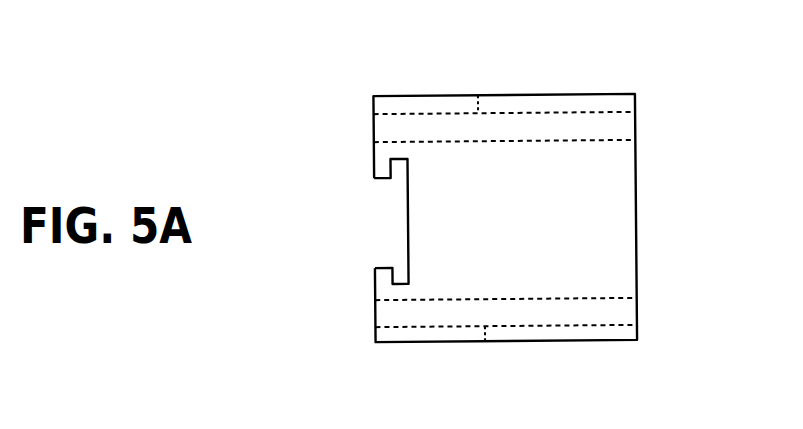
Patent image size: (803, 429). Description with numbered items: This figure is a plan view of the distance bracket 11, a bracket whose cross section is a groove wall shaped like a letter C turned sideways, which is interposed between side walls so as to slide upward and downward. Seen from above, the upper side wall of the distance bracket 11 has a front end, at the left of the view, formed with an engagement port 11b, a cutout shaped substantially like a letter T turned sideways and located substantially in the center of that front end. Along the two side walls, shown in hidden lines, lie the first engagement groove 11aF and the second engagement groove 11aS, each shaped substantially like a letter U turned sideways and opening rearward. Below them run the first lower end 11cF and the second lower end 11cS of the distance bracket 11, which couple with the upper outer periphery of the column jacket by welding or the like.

The distance bracket 11 is at (637, 193).
The engagement port 11b is at (397, 225).
The first engagement groove 11aF is at (555, 103).
The first lower end 11cF is at (443, 147).
The second lower end 11cS is at (586, 297).
The second engagement groove 11aS is at (580, 330).